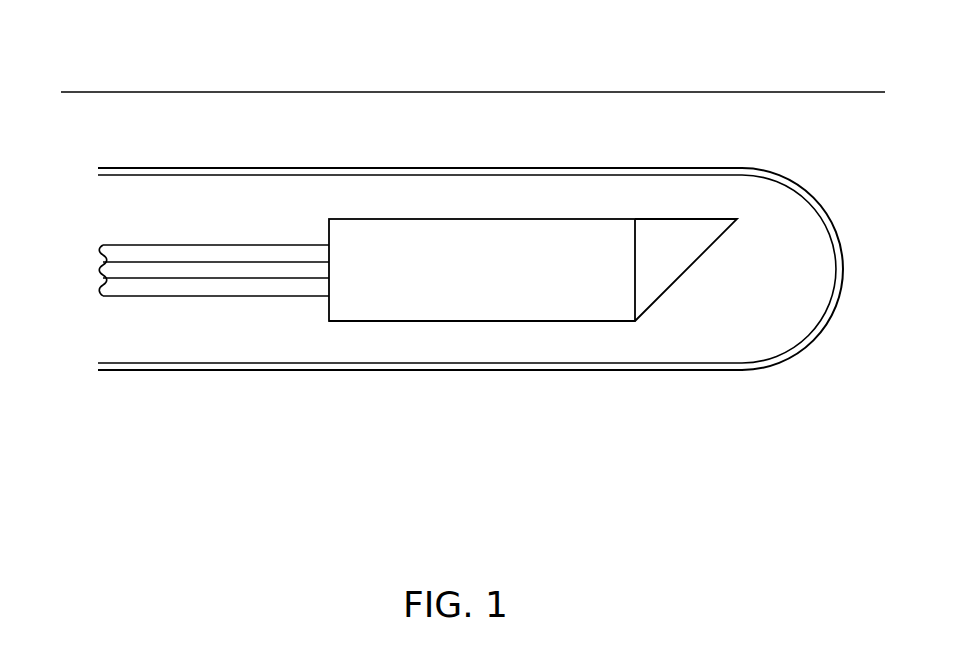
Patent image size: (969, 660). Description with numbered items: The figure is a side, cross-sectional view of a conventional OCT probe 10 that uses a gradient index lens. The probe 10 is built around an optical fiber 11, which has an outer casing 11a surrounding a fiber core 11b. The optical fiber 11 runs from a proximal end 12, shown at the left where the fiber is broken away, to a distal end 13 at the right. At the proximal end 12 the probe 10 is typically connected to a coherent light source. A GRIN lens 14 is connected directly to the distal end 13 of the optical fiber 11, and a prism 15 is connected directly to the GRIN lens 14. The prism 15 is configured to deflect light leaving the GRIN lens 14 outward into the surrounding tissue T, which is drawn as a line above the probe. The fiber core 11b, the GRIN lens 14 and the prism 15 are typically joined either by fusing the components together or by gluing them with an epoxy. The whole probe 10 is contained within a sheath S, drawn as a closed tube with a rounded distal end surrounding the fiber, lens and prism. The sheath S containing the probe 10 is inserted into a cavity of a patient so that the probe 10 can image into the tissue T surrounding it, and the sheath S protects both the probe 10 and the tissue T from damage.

The tissue T is at (81, 92).
The sheath S is at (797, 178).
The OCT probe 10 is at (221, 349).
The optical fiber 11 is at (182, 235).
The casing 11a is at (208, 245).
The fiber core 11b is at (265, 262).
The proximal end 12 is at (102, 288).
The distal end 13 is at (328, 308).
The GRIN lens 14 is at (392, 321).
The prism 15 is at (662, 297).